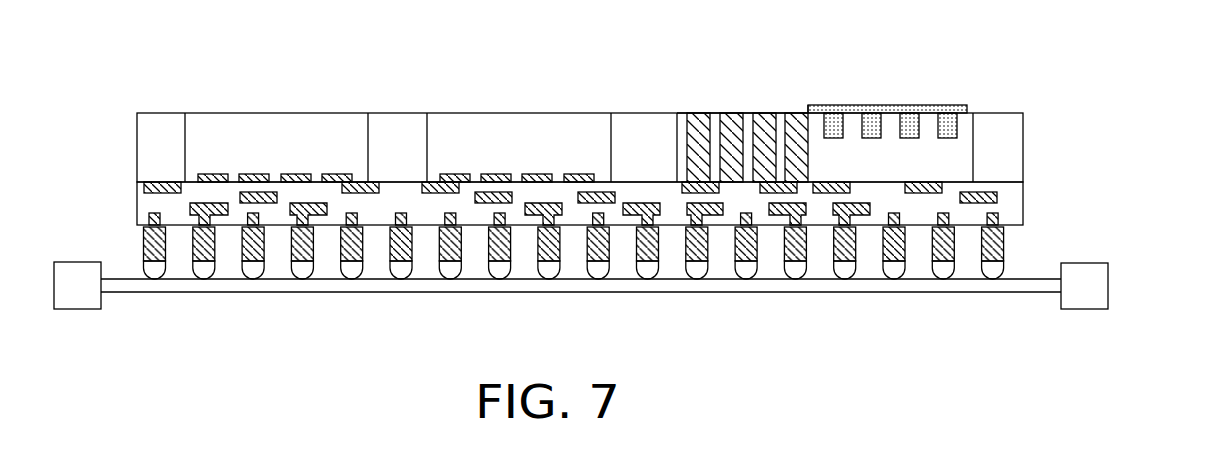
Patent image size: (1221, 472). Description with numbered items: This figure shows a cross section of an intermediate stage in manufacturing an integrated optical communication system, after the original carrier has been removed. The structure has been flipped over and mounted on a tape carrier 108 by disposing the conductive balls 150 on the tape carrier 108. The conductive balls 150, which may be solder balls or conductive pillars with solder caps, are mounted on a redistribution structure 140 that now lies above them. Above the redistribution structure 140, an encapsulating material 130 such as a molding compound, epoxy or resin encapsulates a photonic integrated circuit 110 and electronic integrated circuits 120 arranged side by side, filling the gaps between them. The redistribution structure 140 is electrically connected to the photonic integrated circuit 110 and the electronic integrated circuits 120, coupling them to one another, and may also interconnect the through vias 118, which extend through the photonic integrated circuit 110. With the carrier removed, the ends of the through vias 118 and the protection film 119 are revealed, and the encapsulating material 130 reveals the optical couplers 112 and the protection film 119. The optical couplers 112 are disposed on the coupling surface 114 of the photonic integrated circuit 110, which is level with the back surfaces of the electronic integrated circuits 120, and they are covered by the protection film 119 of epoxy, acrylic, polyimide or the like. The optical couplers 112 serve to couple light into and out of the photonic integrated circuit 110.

The tape carrier 108 is at (1110, 286).
The photonic integrated circuit 110 is at (681, 133).
The optical couplers 112 is at (948, 114).
The coupling surface 114 is at (811, 104).
The through vias 118 is at (730, 118).
The protection film 119 is at (890, 108).
The electronic integrated circuits 120 is at (464, 127).
The encapsulating material 130 is at (1015, 135).
The redistribution structure 140 is at (1017, 212).
The conductive balls 150 is at (1000, 268).